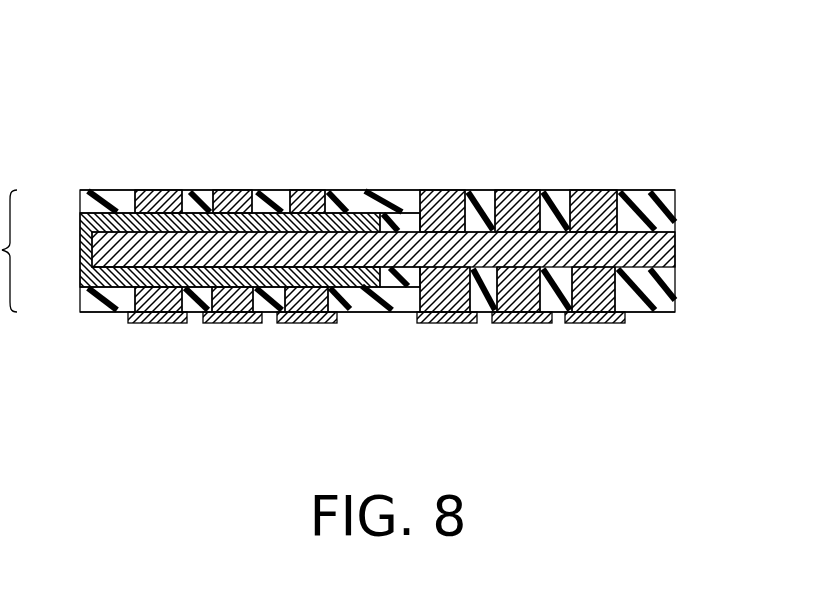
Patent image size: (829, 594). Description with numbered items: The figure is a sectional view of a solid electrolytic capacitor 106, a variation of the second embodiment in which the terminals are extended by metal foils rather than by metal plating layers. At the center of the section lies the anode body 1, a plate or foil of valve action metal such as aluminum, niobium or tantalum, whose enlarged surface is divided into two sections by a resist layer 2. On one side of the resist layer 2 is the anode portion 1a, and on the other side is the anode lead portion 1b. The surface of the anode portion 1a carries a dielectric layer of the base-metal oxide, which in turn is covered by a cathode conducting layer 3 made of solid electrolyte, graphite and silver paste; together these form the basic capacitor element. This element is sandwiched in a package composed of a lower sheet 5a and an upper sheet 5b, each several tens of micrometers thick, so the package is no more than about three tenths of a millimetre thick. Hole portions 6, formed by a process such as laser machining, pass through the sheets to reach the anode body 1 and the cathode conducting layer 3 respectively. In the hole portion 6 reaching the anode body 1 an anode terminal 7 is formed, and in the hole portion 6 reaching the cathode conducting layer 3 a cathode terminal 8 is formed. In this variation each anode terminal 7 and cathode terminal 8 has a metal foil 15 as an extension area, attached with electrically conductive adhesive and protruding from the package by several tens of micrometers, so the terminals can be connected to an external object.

The solid electrolytic capacitor 106 is at (463, 128).
The anode body 1 is at (377, 248).
The anode portion 1a is at (124, 283).
The anode lead portion 1b is at (643, 250).
The resist layer 2 is at (408, 282).
The cathode conducting layer 3 is at (124, 216).
The lower sheet 5a is at (82, 298).
The upper sheet 5b is at (82, 204).
The hole portion 6 is at (337, 190).
The anode terminal 7 is at (448, 190).
The cathode terminal 8 is at (310, 190).
The metal foil 15 is at (153, 323).